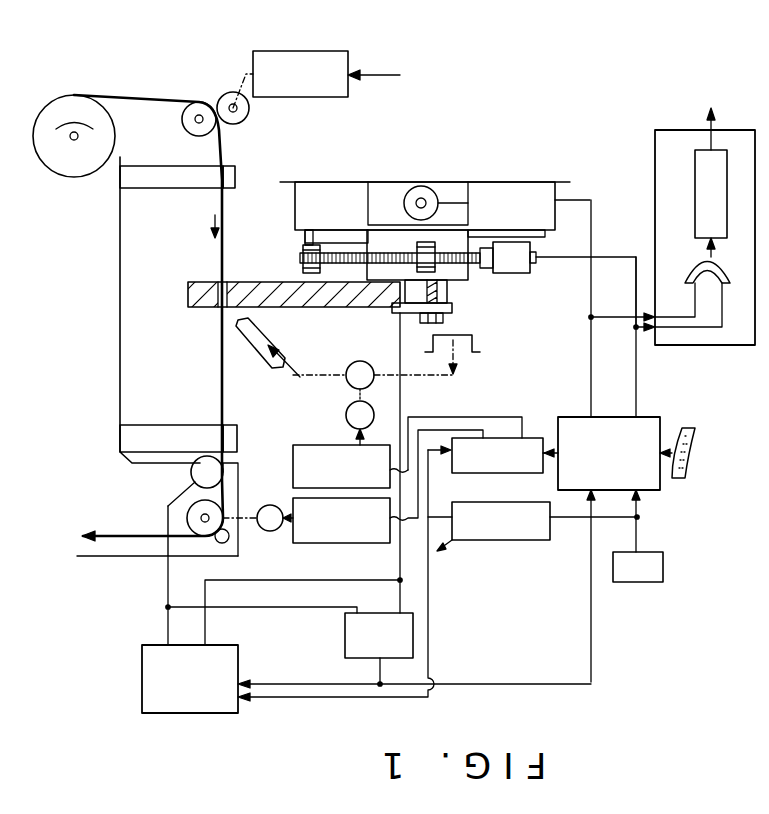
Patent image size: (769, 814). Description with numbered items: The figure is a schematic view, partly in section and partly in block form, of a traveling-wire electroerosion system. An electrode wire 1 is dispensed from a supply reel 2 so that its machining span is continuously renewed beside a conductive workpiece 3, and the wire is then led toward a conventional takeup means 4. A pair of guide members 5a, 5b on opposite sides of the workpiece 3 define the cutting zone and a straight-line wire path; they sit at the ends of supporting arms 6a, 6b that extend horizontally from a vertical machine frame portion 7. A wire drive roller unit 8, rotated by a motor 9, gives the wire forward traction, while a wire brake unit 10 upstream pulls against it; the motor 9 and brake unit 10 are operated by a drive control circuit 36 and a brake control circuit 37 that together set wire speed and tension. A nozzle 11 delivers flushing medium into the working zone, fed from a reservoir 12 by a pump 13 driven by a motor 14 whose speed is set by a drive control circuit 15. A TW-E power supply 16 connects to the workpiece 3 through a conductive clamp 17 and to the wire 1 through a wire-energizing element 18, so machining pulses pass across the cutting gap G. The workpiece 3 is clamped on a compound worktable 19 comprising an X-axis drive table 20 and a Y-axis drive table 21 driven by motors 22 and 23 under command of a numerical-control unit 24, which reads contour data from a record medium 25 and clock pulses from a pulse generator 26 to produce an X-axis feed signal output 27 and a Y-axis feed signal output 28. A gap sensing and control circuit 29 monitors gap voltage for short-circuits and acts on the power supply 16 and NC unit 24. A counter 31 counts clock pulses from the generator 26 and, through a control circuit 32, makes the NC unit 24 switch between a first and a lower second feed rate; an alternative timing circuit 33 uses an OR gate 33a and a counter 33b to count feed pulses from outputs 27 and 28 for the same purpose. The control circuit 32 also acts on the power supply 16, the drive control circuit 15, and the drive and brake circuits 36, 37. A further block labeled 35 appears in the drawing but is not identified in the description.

The electrode wire 1 is at (222, 380).
The supply reel 2 is at (66, 164).
The workpiece 3 is at (263, 283).
The takeup means 4 is at (79, 535).
The guide member 5a is at (237, 171).
The guide member 5b is at (238, 436).
The supporting arm 6a is at (178, 188).
The supporting arm 6b is at (162, 425).
The vertical machine frame portion 7 is at (121, 338).
The wire drive roller unit 8 is at (205, 545).
The motor 9 is at (271, 531).
The wire brake unit 10 is at (213, 94).
The nozzle 11 is at (283, 351).
The reservoir 12 is at (473, 344).
The pump 13 is at (349, 382).
The motor 14 is at (346, 417).
The drive control circuit 15 is at (293, 474).
The TW-E power supply 16 is at (142, 663).
The conductive clamp 17 is at (445, 318).
The wire-energizing element 18 is at (191, 478).
The compound worktable 19 is at (473, 279).
The X-axis drive table 20 is at (364, 300).
The Y-axis drive table 21 is at (296, 215).
The motor 22 is at (520, 274).
The motor 23 is at (425, 186).
The numerical-control unit 24 is at (645, 416).
The record medium 25 is at (690, 427).
The pulse generator 26 is at (638, 582).
The X-axis feed signal output 27 is at (636, 386).
The Y-axis feed signal output 28 is at (591, 383).
The gap sensing and control circuit 29 is at (345, 637).
The counter 31 is at (493, 539).
The control circuit 32 is at (530, 418).
The timing circuit 33 is at (655, 201).
The OR gate 33a is at (702, 263).
The counter 33b is at (690, 168).
The control circuit 35 is at (505, 455).
The drive control circuit 36 is at (341, 545).
The brake control circuit 37 is at (299, 97).
The cutting gap G is at (219, 311).